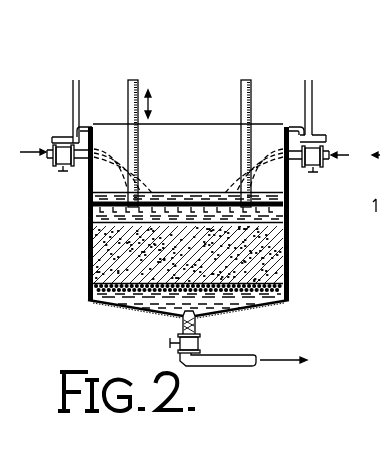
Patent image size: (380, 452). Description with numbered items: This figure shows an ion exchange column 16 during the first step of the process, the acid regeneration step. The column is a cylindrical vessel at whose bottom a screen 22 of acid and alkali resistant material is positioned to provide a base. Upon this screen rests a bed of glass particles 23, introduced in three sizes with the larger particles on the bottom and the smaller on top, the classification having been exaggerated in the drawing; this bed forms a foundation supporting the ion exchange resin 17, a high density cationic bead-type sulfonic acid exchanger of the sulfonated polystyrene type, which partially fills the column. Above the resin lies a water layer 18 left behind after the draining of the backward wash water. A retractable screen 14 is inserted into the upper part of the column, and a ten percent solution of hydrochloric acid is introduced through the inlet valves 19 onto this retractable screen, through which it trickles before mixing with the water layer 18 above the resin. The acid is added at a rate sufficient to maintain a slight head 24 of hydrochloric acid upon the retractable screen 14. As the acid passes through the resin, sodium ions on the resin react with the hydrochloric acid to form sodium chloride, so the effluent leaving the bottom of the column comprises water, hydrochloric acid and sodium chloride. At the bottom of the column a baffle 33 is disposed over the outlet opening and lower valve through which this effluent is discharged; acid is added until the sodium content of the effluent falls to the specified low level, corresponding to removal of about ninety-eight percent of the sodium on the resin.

The retractable screen 14 is at (163, 207).
The ion exchange column 16 is at (290, 214).
The ion exchange resin 17 is at (90, 273).
The water layer 18 is at (88, 222).
The inlet valve 19 is at (62, 147).
The screen 22 is at (262, 305).
The glass particles 23 is at (288, 258).
The head of hydrochloric acid 24 is at (93, 199).
The baffle 33 is at (180, 322).